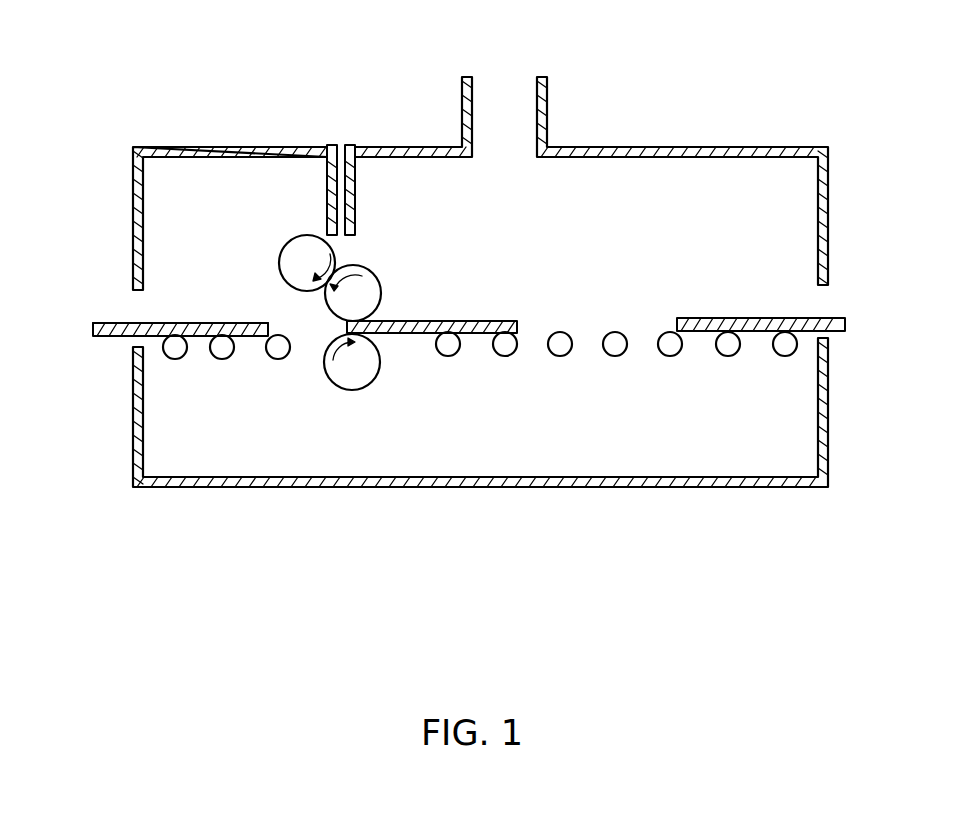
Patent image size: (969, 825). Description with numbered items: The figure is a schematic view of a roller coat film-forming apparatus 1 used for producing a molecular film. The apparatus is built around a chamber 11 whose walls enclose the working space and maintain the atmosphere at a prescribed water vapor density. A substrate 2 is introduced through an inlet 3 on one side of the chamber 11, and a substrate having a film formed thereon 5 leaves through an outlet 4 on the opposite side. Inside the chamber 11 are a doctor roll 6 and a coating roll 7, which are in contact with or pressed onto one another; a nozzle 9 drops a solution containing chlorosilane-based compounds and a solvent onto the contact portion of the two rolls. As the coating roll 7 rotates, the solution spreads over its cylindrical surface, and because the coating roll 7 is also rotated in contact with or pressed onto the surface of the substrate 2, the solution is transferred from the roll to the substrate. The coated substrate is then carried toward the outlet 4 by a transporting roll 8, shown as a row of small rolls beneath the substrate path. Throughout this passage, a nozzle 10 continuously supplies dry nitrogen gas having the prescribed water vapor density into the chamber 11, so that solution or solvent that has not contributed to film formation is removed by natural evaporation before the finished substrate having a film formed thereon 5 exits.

The roller coat film-forming apparatus 1 is at (100, 543).
The substrate 2 is at (168, 322).
The inlet 3 is at (137, 312).
The outlet 4 is at (822, 302).
The substrate having a film formed thereon 5 is at (490, 320).
The doctor roll 6 is at (300, 240).
The coating roll 7 is at (363, 277).
The transporting roll 8 is at (175, 359).
The nozzle for dropping a chlorosilane-based solution 9 is at (343, 159).
The nozzle for supplying a gas 10 is at (495, 90).
The chamber 11 is at (773, 143).